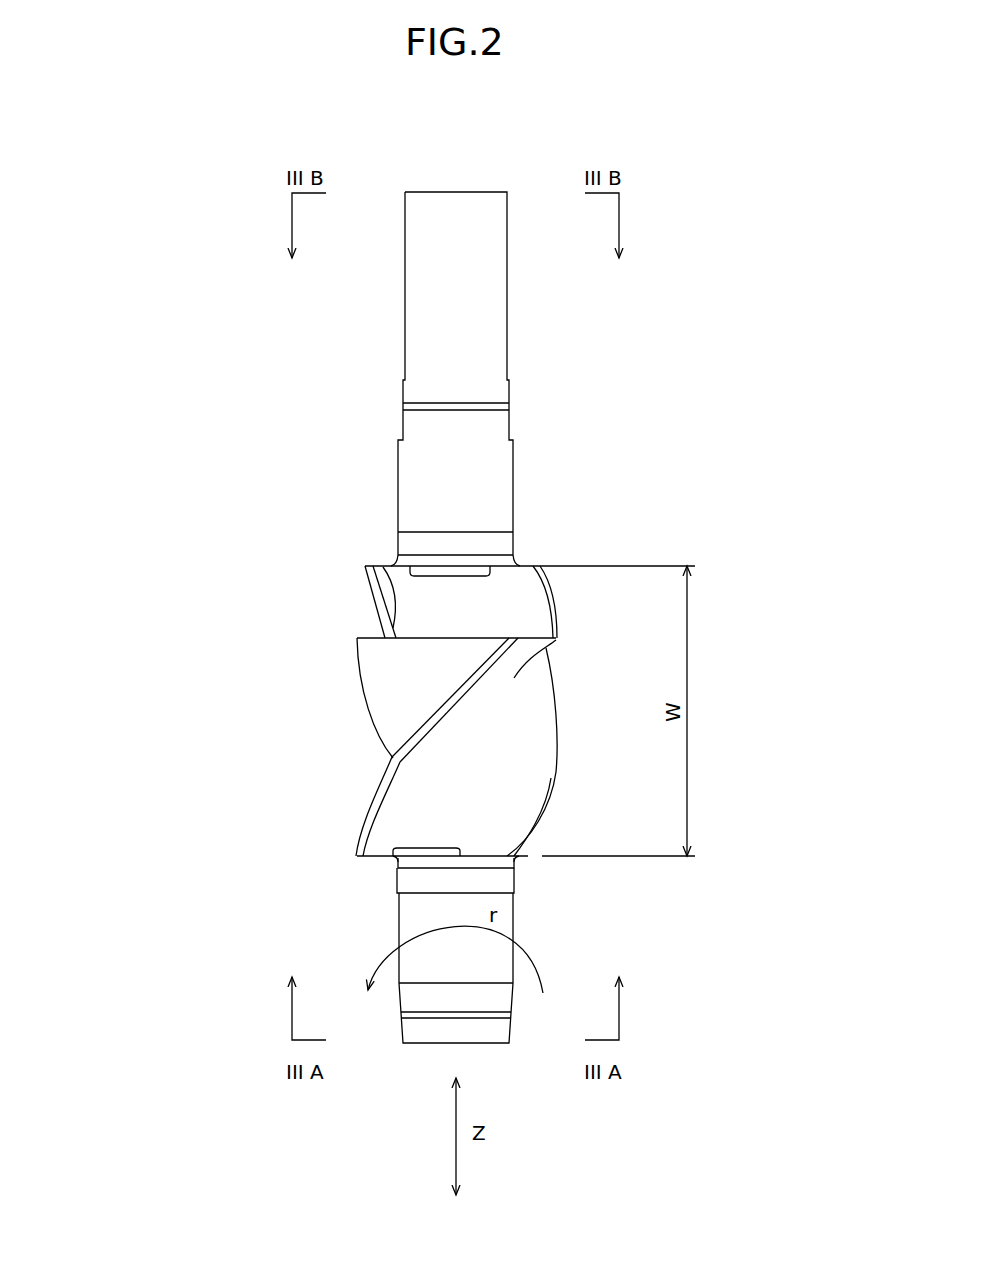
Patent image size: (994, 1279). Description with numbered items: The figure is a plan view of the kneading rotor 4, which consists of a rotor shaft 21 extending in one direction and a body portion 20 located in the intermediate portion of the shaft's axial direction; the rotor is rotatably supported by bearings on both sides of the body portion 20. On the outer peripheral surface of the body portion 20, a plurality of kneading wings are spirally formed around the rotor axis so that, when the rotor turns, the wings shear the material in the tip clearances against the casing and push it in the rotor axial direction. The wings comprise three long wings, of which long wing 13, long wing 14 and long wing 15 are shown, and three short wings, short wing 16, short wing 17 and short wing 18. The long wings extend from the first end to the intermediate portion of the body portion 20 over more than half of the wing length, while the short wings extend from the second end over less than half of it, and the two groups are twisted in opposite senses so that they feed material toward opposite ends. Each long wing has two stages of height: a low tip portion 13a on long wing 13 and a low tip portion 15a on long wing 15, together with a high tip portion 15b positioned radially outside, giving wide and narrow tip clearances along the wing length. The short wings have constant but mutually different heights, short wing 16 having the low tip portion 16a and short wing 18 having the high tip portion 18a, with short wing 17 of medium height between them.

The kneading rotor 4 is at (716, 98).
The long wing 13 is at (558, 772).
The low tip portion 13a is at (541, 828).
The long wing 14 is at (355, 680).
The long wing 15 is at (410, 740).
The low tip portion 15a is at (447, 720).
The high tip portion 15b is at (371, 812).
The short wing 16 is at (558, 594).
The low tip portion 16a is at (552, 596).
The short wing 17 is at (383, 627).
The short wing 18 is at (368, 590).
The high tip portion 18a is at (385, 578).
The body portion 20 is at (233, 655).
The rotor shaft 21 is at (513, 490).